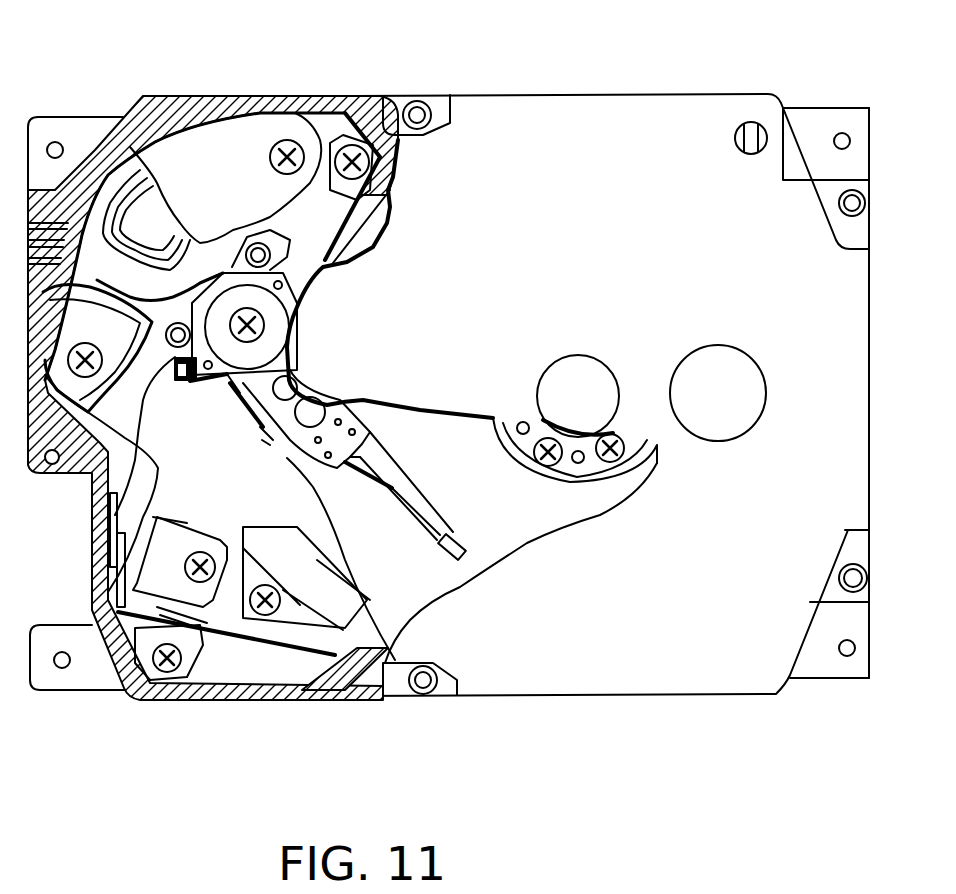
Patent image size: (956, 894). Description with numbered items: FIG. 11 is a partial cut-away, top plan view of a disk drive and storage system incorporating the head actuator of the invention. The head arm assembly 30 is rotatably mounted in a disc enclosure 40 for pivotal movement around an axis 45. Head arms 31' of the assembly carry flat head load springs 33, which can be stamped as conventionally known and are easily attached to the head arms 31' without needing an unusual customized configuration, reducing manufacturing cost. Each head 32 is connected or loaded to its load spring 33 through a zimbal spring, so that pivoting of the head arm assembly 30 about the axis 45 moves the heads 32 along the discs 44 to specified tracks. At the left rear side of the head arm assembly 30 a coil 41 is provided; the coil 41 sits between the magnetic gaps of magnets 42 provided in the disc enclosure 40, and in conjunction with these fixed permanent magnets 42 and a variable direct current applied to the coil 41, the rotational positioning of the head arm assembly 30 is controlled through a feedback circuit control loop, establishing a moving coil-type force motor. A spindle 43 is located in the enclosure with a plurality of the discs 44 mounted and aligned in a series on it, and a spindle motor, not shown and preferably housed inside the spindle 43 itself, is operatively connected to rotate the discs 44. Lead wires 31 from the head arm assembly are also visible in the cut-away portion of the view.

The head arm assembly 30 is at (237, 372).
The lead wires 31 is at (75, 542).
The head arm 31' is at (302, 559).
The head 32 is at (437, 542).
The head load spring 33 is at (423, 517).
The disc enclosure 40 is at (368, 110).
The coil 41 is at (92, 243).
The magnet 42 is at (235, 147).
The spindle 43 is at (623, 463).
The disc 44 is at (520, 530).
The axis 45 is at (266, 326).